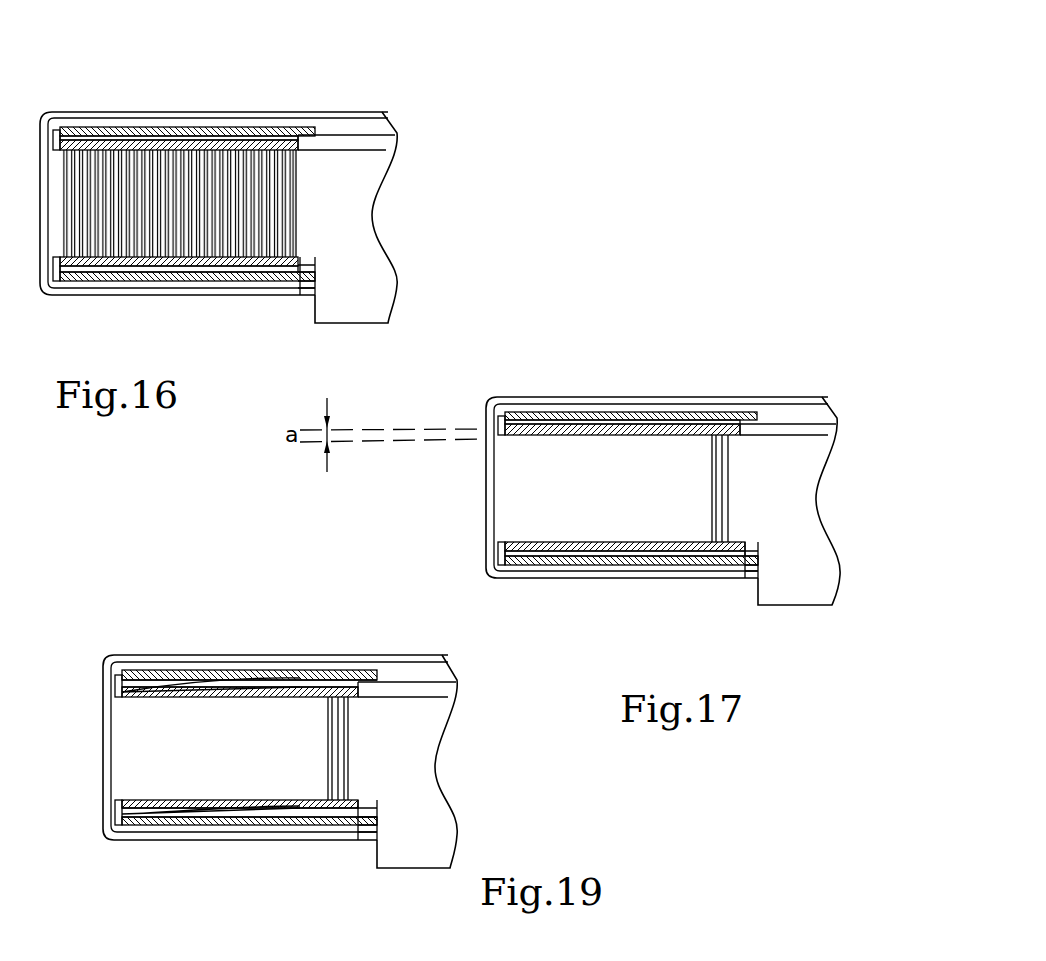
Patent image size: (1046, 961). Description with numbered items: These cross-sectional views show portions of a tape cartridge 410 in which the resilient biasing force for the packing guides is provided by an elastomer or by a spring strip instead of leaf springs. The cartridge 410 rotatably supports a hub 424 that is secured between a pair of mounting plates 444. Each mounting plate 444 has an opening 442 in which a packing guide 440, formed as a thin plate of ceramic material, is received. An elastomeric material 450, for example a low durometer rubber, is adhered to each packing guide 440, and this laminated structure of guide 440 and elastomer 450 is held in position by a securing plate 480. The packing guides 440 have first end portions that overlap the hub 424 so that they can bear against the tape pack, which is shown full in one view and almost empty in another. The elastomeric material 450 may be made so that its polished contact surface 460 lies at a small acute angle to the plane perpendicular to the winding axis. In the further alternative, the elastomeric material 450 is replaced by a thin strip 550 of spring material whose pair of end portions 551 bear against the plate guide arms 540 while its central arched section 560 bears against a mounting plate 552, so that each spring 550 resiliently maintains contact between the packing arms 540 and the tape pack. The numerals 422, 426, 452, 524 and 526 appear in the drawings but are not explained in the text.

In FIG. 16, the cartridge 410 is at (40, 108).
In FIG. 17, the cap layer 422 is at (610, 420).
In FIG. 16, the hub 424 is at (330, 237).
In FIG. 17, the hub 424 is at (778, 596).
In FIG. 16, the bottom electrode layer 426 is at (208, 232).
In FIG. 16, the packing guide 440 is at (172, 158).
In FIG. 17, the packing guide 440 is at (628, 438).
In FIG. 16, the opening 442 is at (304, 163).
In FIG. 19, the opening 442 is at (382, 723).
In FIG. 16, the mounting plate 444 is at (340, 143).
In FIG. 17, the mounting plate 444 is at (775, 425).
In FIG. 16, the elastomeric material 450 is at (78, 140).
In FIG. 17, the elastomeric material 450 is at (530, 435).
In FIG. 16, the inner electrode layer 452 is at (147, 150).
In FIG. 17, the polished contact surface 460 is at (517, 440).
In FIG. 16, the securing plate 480 is at (102, 140).
In FIG. 19, the housing body 524 is at (415, 790).
In FIG. 19, the electrode plates 526 is at (328, 752).
In FIG. 19, the plate guide arm 540 is at (262, 698).
In FIG. 19, the strip of spring material 550 is at (158, 685).
In FIG. 19, the end portion 551 is at (335, 702).
In FIG. 19, the mounting plate 552 is at (303, 680).
In FIG. 19, the central arched section 560 is at (235, 680).